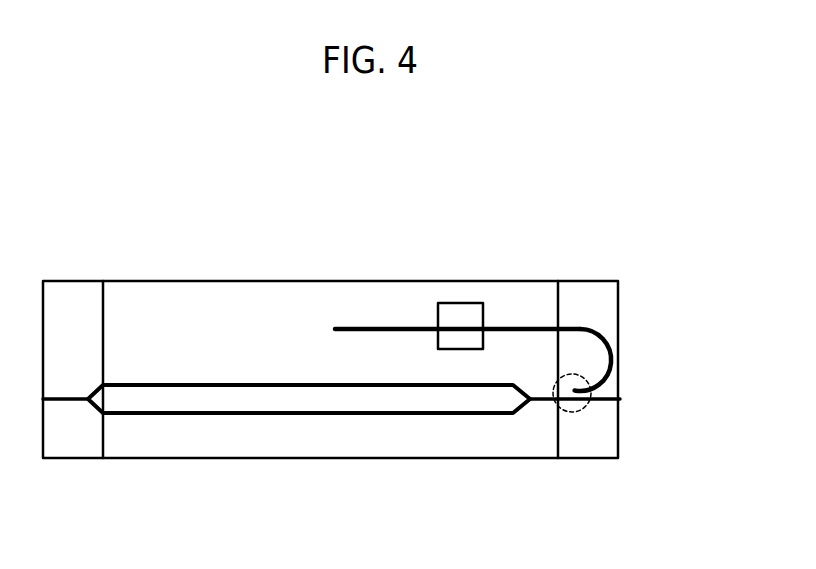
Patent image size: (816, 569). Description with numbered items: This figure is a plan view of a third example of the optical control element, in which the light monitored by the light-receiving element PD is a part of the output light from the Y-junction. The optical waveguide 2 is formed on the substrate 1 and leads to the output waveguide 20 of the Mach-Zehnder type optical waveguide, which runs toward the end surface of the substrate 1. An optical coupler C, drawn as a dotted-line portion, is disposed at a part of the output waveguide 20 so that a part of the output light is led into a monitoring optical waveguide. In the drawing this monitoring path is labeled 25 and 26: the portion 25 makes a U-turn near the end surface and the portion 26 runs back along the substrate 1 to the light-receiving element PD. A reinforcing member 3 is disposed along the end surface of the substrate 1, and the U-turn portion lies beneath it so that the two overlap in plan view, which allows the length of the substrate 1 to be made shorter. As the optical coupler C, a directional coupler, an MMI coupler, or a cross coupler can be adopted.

The substrate 1 is at (308, 433).
The optical waveguide 2 is at (192, 422).
The reinforcing member 3 is at (592, 298).
The output waveguide 20 is at (548, 404).
The curved monitor waveguide 25 is at (612, 360).
The monitor waveguide 26 is at (407, 328).
The light-receiving element PD is at (458, 303).
The optical coupler C is at (572, 409).